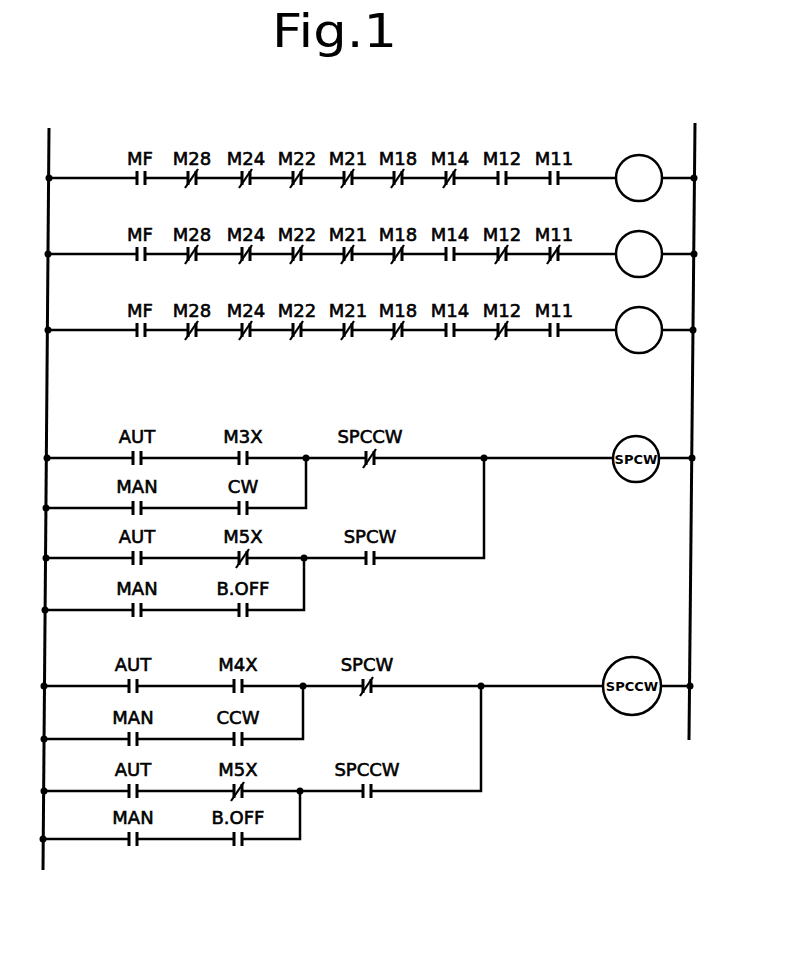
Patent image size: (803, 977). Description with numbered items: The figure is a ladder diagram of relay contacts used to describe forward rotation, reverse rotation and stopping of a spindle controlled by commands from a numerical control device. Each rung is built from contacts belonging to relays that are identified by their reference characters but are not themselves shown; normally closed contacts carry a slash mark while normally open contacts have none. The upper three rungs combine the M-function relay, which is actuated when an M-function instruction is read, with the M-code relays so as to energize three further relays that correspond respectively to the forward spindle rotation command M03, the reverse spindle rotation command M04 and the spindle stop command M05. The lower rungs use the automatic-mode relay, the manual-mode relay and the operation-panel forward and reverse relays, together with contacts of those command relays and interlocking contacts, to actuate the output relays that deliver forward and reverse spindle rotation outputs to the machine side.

The forward spindle rotation command M03 is at (685, 178).
The reverse spindle rotation command M04 is at (685, 254).
The spindle stop command M05 is at (685, 330).